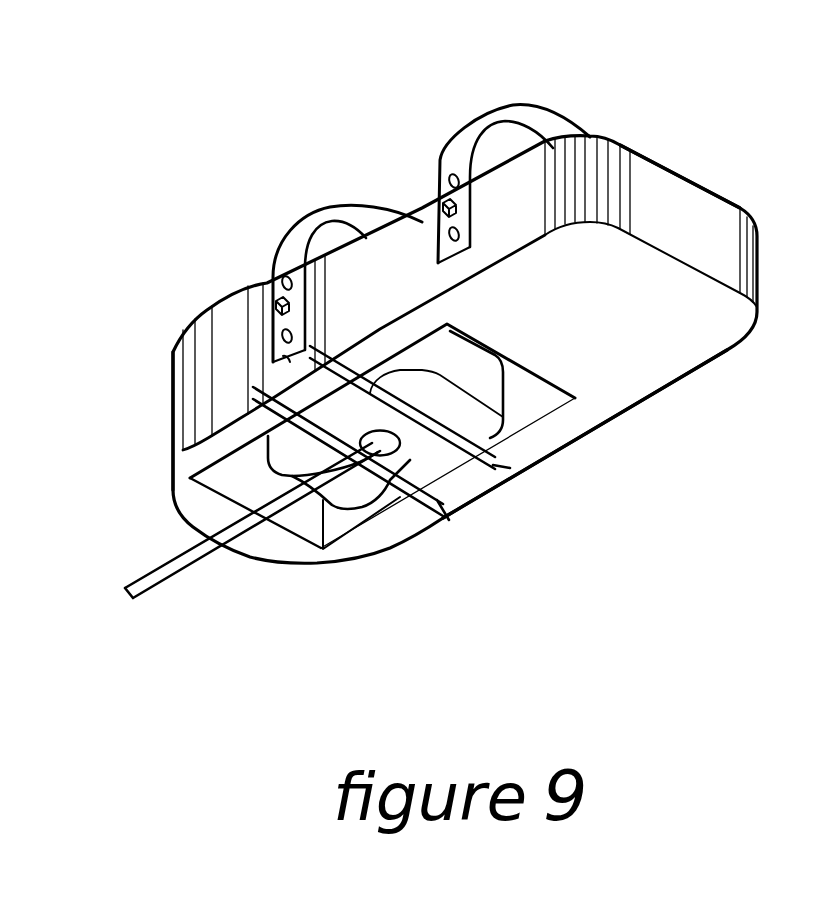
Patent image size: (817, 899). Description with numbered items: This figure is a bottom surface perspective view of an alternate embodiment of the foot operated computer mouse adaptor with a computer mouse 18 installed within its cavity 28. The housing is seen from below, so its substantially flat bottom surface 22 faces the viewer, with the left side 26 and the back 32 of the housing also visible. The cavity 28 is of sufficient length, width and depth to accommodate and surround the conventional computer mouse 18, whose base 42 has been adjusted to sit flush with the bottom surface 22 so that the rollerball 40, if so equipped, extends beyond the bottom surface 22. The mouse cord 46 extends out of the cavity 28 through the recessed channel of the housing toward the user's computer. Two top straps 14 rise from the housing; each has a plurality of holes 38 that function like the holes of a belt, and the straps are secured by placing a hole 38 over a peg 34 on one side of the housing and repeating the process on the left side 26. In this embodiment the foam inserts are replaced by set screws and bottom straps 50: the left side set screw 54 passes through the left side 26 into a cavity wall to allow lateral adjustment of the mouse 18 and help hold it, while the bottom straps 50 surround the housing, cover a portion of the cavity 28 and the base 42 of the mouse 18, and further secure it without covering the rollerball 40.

The top strap 14 is at (291, 230).
The computer mouse 18 is at (477, 375).
The bottom surface 22 is at (647, 357).
The left side 26 is at (403, 287).
The cavity 28 is at (307, 515).
The back 32 is at (688, 222).
The peg 34 is at (277, 304).
The hole 38 is at (272, 280).
The rollerball 40 is at (185, 450).
The base 42 is at (360, 505).
The mouse cord 46 is at (188, 566).
The bottom strap 50 is at (500, 467).
The left side set screw 54 is at (180, 430).